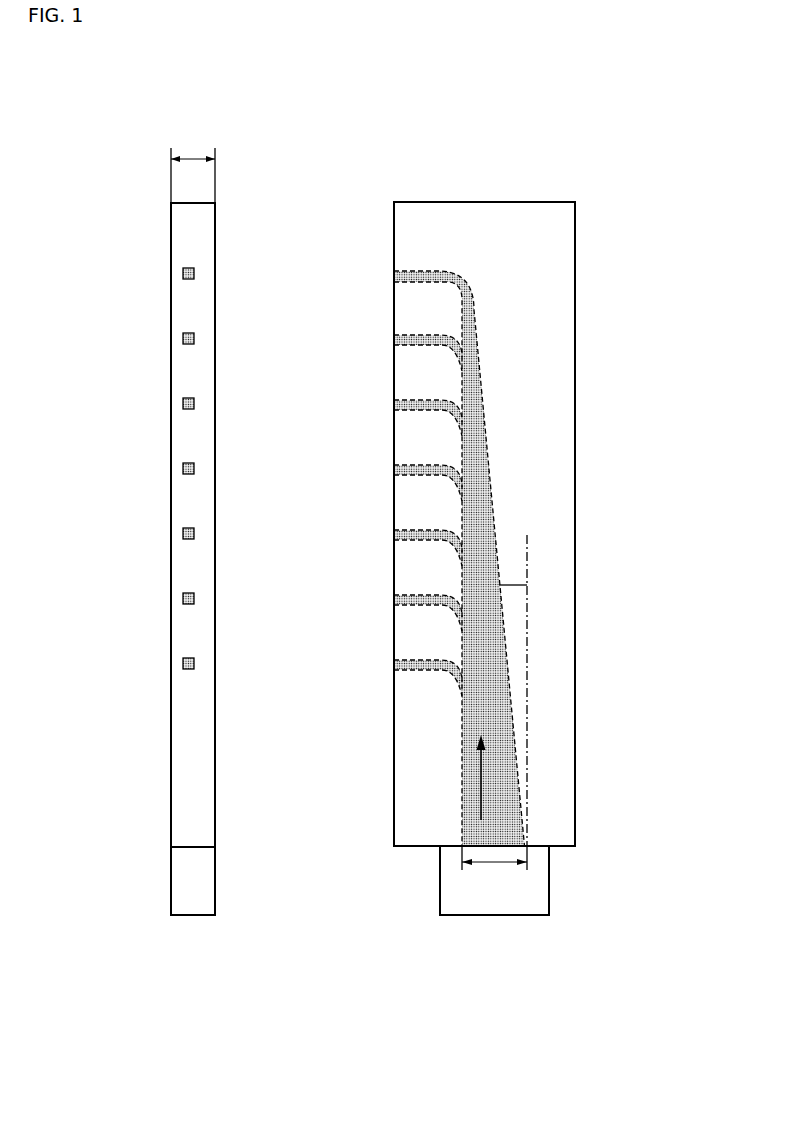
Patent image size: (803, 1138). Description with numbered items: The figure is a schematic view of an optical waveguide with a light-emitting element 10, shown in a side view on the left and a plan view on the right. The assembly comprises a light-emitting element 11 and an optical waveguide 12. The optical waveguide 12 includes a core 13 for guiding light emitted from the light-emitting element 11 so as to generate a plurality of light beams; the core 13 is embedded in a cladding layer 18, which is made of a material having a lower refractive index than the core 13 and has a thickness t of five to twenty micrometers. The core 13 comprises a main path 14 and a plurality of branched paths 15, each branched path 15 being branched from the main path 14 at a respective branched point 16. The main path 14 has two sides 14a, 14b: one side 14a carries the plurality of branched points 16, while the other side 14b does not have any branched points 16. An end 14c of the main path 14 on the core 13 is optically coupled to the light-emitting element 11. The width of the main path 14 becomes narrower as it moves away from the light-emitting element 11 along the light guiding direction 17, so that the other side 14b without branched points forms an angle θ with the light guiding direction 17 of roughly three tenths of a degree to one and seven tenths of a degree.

The optical waveguide with a light-emitting element 10 is at (266, 173).
The light-emitting element 11 is at (171, 915).
The optical waveguide 12 is at (216, 248).
The core 13 is at (492, 493).
The main path 14 is at (462, 808).
The one side of the main path 14a is at (462, 740).
The other side of the main path 14b is at (517, 743).
The end of the main path 14c is at (492, 845).
The branched paths 15 is at (183, 274).
The branched points 16 is at (461, 347).
The light guiding direction 17 is at (480, 773).
The cladding layer 18 is at (195, 770).